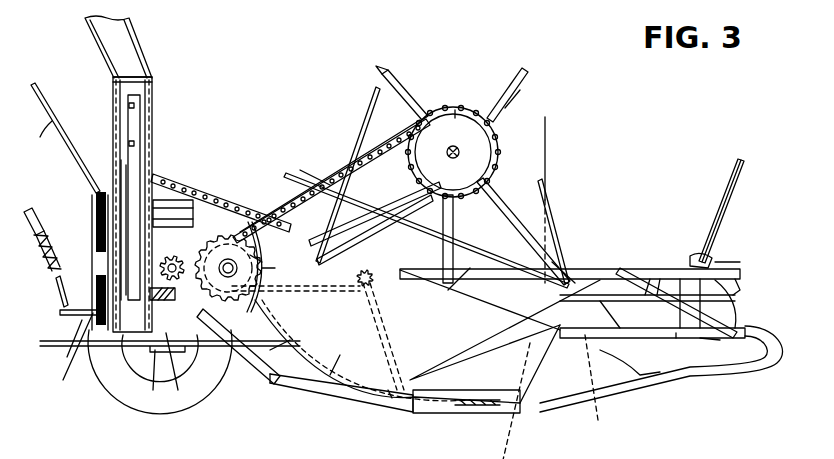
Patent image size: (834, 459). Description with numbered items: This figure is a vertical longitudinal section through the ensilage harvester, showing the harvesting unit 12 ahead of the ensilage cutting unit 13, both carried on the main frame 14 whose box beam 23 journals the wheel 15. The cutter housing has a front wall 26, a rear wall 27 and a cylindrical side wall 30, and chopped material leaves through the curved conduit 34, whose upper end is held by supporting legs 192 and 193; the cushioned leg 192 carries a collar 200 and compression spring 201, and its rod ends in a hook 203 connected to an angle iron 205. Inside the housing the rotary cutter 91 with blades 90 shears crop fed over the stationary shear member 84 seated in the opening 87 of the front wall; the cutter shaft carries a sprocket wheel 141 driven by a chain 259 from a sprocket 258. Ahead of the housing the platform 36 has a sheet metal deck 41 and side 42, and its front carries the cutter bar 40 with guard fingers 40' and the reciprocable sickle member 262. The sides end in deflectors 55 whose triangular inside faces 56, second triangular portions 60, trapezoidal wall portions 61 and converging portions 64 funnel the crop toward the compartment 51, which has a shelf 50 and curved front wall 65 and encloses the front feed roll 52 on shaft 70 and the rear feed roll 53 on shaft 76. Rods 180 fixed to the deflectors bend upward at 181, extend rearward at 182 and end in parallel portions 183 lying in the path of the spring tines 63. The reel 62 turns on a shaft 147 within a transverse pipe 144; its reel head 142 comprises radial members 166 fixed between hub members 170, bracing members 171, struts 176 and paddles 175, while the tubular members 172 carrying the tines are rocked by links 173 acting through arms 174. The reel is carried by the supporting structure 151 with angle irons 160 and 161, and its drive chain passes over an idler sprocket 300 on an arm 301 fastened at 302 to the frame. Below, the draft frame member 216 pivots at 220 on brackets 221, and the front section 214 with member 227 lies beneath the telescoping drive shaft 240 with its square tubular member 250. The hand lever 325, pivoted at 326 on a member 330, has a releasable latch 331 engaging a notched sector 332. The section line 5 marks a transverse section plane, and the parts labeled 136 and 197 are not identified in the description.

The curved conduit 34 is at (146, 29).
The cylindrical side wall 30 is at (132, 75).
The blades 90 is at (135, 108).
The front wall 26 is at (152, 124).
The ensilage cutting unit 13 is at (161, 150).
The rear wall 27 is at (113, 128).
The rotary cutter 91 is at (121, 170).
The lever 197 is at (65, 138).
The supporting leg 193 is at (50, 133).
The bracket 136 is at (62, 207).
The sprocket wheel 141 is at (95, 200).
The supporting leg 192 is at (52, 225).
The compression spring 201 is at (60, 248).
The chain 259 is at (64, 251).
The collar 200 is at (60, 290).
The hook 203 is at (68, 312).
The angle iron 205 is at (58, 345).
The sprocket 258 is at (63, 351).
The wheel 15 is at (115, 393).
The brackets 221 is at (148, 378).
The pivot 220 is at (182, 370).
The box beam 23 is at (157, 350).
The stationary shear member 84 is at (200, 350).
The converging member 216 is at (262, 370).
The opening 87 is at (162, 226).
The transverse shaft 76 is at (160, 268).
The rear feed roll 53 is at (176, 258).
The shelf 50 is at (240, 236).
The compartment 51 is at (228, 197).
The curved front wall 65 is at (264, 270).
The front feed roll 52 is at (264, 260).
The transverse shaft 70 is at (266, 268).
The arm 174 is at (620, 258).
The idler sprocket 300 is at (376, 283).
The arm 301 is at (399, 350).
The trapezoidal wall portions 61 is at (417, 328).
The sheet metal paddles 175 is at (312, 195).
The struts 176 is at (320, 178).
The left hand supporting structure 151 is at (344, 170).
The bracing member 171 is at (363, 130).
The angle iron 161 is at (362, 188).
The radial members 166 is at (412, 90).
The links 173 is at (416, 120).
The reel 62 is at (499, 92).
The hub members 170 is at (456, 108).
The shaft 147 is at (453, 152).
The transverse pipe 144 is at (455, 159).
The reel head 142 is at (513, 187).
The angle iron 160 is at (455, 235).
The side 42 is at (476, 268).
The transverse tubular members 172 is at (520, 306).
The section line 5 is at (553, 120).
The harvesting unit 12 is at (571, 247).
The square tubular member 250 is at (740, 270).
The pivot 326 is at (682, 318).
The member 330 is at (748, 330).
The notched sector 332 is at (738, 285).
The rearwardly extending portions 182 is at (736, 305).
The rear end portions 183 is at (655, 272).
The deflectors 55 is at (650, 318).
The spring tines 63 is at (310, 307).
The converging portions 64 is at (306, 325).
The second triangular portion 60 is at (540, 340).
The guard fingers 40' is at (543, 364).
The inside faces 56 is at (618, 380).
The rods 180 is at (717, 373).
The bend 181 is at (770, 362).
The member 227 is at (676, 335).
The front section 214 is at (725, 347).
The hand lever 325 is at (727, 190).
The releasable latch 331 is at (700, 250).
The telescoping drive shaft 240 is at (742, 260).
The platform 36 is at (345, 385).
The main frame 14 is at (296, 399).
The fastening point 302 is at (390, 398).
The cutter bar 40 is at (466, 417).
The sickle member 262 is at (482, 412).
The sheet metal deck 41 is at (325, 362).